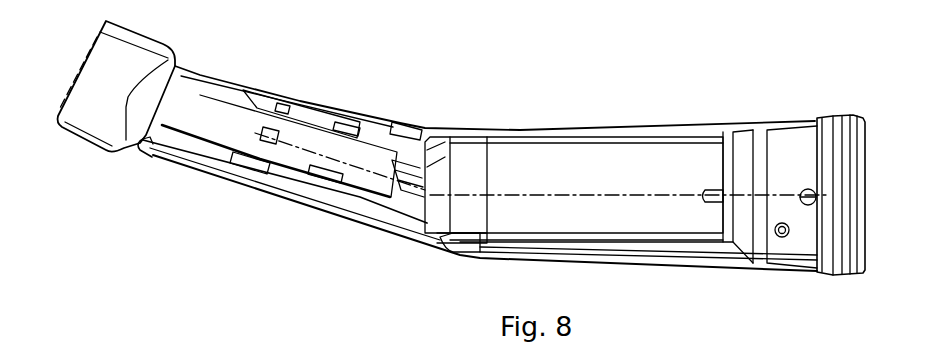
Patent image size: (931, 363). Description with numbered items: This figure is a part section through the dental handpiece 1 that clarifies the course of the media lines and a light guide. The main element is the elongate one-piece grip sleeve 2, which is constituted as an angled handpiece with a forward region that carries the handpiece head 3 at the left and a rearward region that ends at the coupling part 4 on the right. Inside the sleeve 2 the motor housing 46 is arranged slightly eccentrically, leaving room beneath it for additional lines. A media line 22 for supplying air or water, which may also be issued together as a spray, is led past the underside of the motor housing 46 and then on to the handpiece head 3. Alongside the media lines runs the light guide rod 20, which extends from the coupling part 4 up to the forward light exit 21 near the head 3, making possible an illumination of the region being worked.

The handpiece 1 is at (446, 84).
The grip sleeve 2 is at (510, 128).
The handpiece head 3 is at (92, 40).
The coupling part 4 is at (790, 134).
The light guide rod 20 is at (470, 250).
The forward light exit 21 is at (143, 148).
The media line 22 is at (355, 204).
The motor housing 46 is at (578, 155).